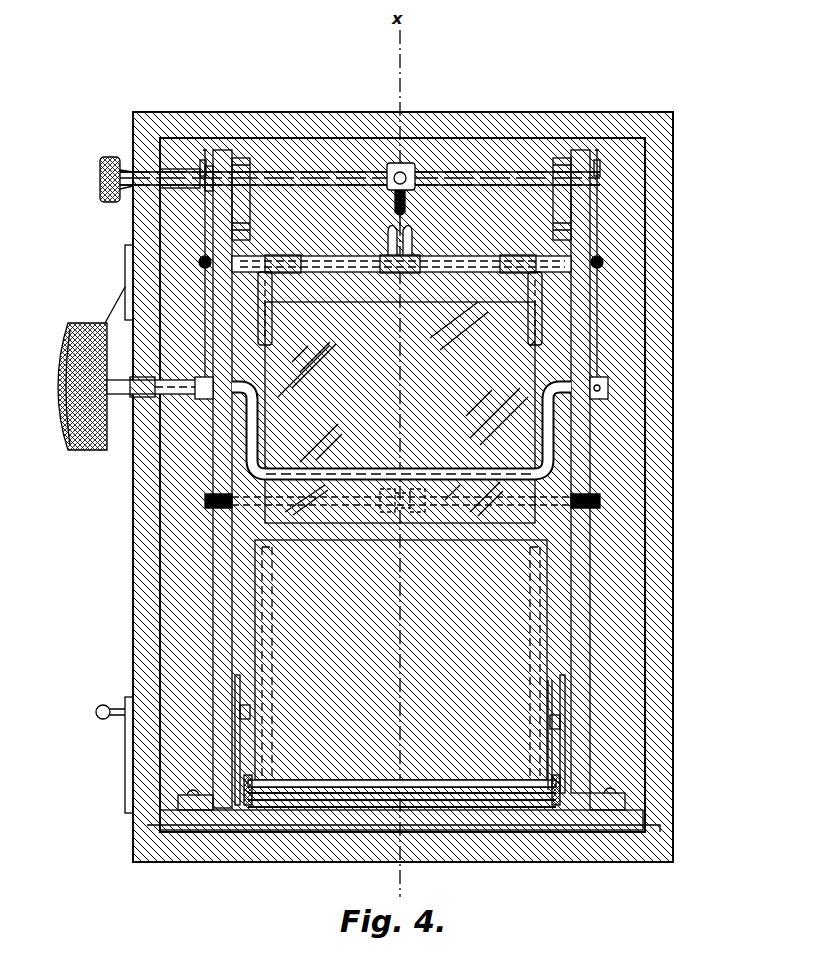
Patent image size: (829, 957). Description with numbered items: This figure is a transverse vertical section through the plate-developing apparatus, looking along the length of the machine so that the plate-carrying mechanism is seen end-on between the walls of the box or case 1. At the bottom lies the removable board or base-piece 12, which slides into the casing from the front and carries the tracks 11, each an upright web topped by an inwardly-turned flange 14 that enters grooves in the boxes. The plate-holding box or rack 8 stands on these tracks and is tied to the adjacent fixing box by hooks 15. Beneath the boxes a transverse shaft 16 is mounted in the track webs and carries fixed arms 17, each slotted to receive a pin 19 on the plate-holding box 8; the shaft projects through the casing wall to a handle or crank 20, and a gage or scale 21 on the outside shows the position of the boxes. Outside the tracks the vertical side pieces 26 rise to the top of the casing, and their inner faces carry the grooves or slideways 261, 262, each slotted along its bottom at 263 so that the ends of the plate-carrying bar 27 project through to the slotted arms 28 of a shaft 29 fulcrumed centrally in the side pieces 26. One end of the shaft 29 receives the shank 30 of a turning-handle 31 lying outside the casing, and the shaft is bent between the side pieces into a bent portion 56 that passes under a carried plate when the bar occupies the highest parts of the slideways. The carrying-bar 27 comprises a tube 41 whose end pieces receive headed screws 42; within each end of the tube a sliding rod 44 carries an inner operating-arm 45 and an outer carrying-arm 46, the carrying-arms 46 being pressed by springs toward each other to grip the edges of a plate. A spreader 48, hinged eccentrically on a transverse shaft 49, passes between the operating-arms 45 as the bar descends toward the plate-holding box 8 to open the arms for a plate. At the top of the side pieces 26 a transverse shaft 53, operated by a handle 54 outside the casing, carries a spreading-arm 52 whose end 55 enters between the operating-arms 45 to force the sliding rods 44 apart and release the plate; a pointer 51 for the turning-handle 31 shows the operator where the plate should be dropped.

The box or case 1 is at (660, 465).
The plate-holding box or rack 8 is at (401, 660).
The tracks 11 is at (272, 787).
The removable board or base-piece 12 is at (290, 832).
The inwardly-turned flange 14 is at (256, 778).
The hooks 15 is at (553, 700).
The transverse shaft 16 is at (425, 790).
The fixed arms 17 is at (235, 745).
The pin 19 is at (238, 712).
The handle or crank 20 is at (125, 757).
The gage or scale 21 is at (125, 697).
The vertical side pieces 26 is at (214, 556).
The plate-carrying bar 27 is at (460, 262).
The slotted arms 28 is at (205, 330).
The shaft 29 is at (200, 382).
The shank 30 is at (180, 395).
The turning-handle 31 is at (62, 410).
The tube 41 is at (406, 272).
The headed screws 42 is at (203, 257).
The sliding rod 44 is at (280, 262).
The operating-arm 45 is at (386, 234).
The carrying-arm 46 is at (272, 317).
The spreader 48 is at (405, 489).
The transverse shaft 49 is at (252, 508).
The pointer 51 is at (123, 290).
The spreading-arm 52 is at (408, 217).
The transverse shaft 53 is at (292, 172).
The handle 54 is at (100, 175).
The end of spreading-arm 55 is at (388, 183).
The bent portion 56 is at (286, 467).
The groove or slideway 261 is at (240, 209).
The groove or slideway 262 is at (558, 220).
The slot 263 is at (218, 218).